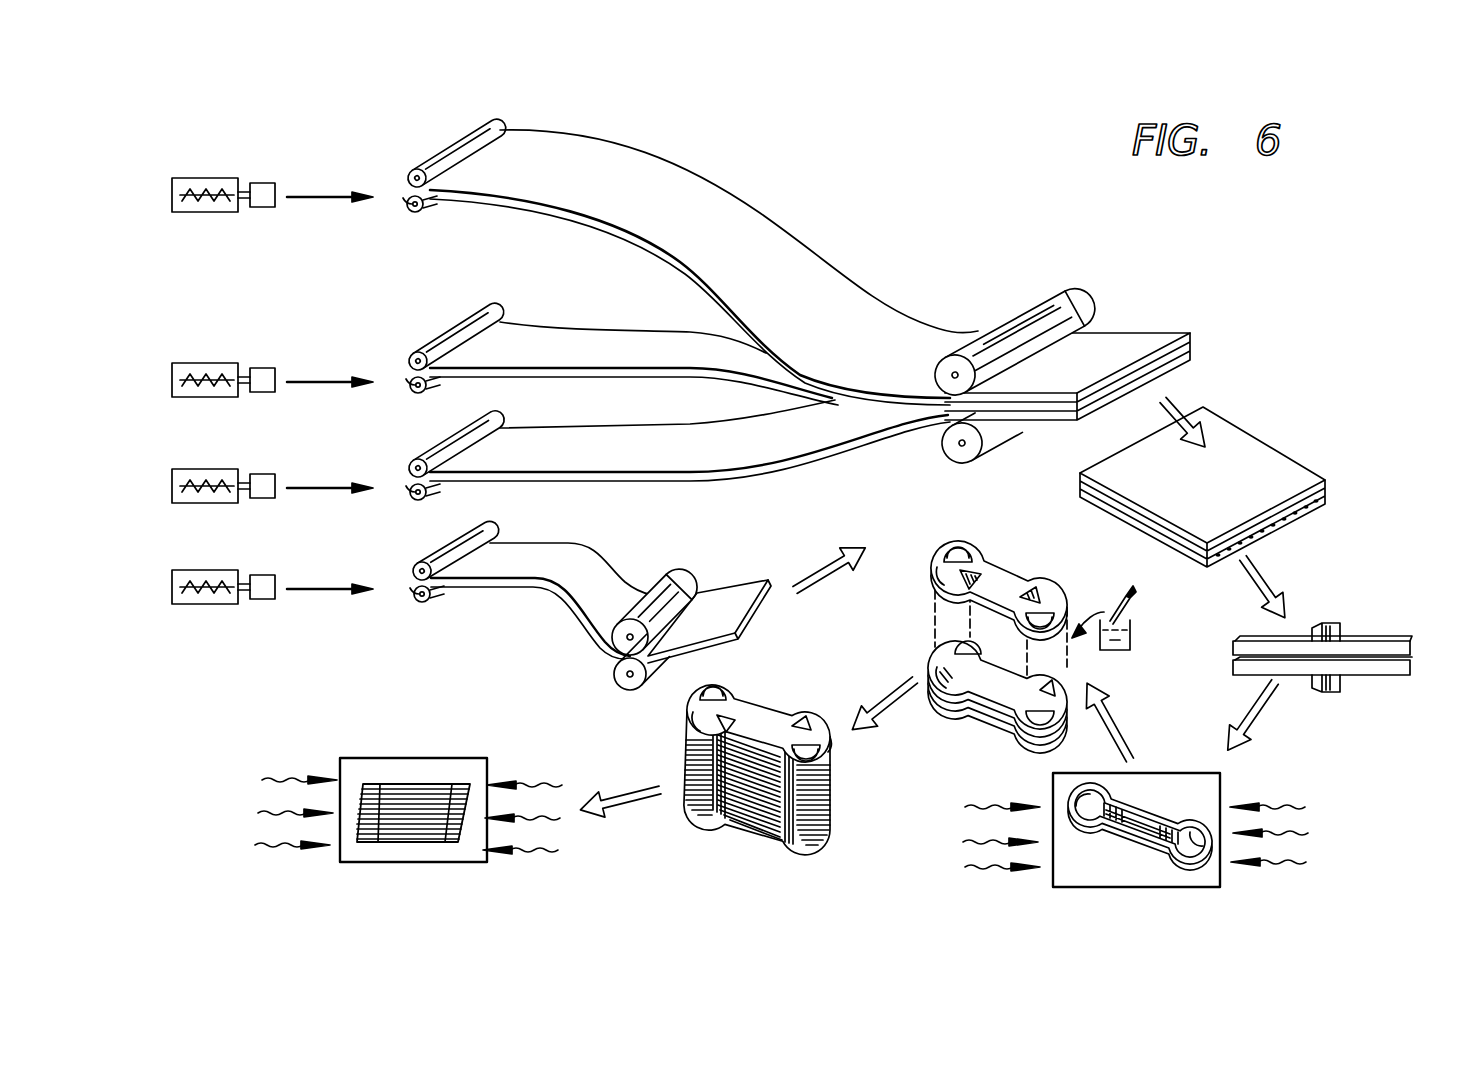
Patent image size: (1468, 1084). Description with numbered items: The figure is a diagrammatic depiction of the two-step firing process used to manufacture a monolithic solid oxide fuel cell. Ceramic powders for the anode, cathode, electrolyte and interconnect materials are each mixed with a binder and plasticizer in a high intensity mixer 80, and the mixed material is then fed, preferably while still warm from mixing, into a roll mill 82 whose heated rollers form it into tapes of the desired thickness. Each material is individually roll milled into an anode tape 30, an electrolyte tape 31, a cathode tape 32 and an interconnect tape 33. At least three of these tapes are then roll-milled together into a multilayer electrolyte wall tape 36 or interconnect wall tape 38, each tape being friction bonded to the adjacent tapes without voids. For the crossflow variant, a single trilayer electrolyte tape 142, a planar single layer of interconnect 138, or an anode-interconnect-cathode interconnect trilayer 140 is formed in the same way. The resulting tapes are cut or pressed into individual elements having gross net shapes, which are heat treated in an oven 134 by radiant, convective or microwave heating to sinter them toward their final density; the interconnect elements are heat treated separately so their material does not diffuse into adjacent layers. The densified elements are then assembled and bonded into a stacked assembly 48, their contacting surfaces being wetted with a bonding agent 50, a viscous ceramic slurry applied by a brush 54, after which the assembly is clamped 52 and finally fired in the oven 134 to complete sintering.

The anode tape 30 is at (762, 226).
The electrolyte tape 31 is at (547, 340).
The cathode tape 32 is at (578, 446).
The interconnect tape 33 is at (585, 568).
The multilayer electrolyte wall tape 36 is at (1135, 403).
The multilayer interconnect wall tape 38 is at (1128, 340).
The stacked assembly 48 is at (762, 802).
The bonding agent 50 is at (1128, 647).
The clamp press 52 is at (1365, 642).
The brush 54 is at (1128, 612).
The high intensity mixer 80 is at (206, 178).
The roll mill 82 is at (446, 156).
The oven 134 is at (404, 758).
The planar single layer of interconnect 138 is at (969, 671).
The interconnect trilayer 140 is at (969, 671).
The trilayer electrolyte tape 142 is at (1082, 802).